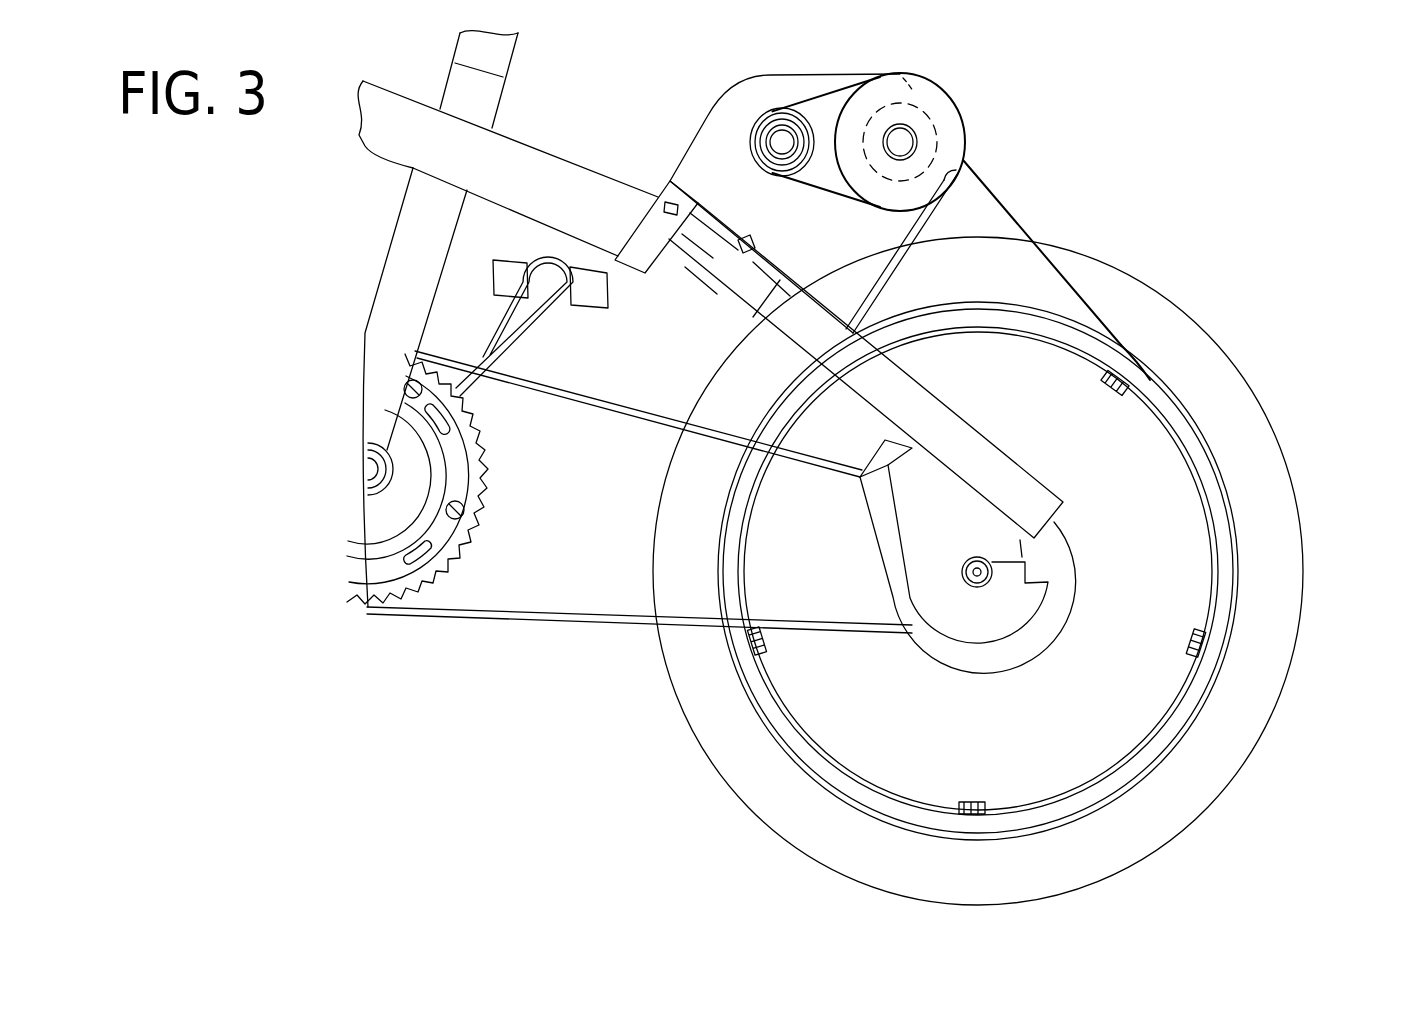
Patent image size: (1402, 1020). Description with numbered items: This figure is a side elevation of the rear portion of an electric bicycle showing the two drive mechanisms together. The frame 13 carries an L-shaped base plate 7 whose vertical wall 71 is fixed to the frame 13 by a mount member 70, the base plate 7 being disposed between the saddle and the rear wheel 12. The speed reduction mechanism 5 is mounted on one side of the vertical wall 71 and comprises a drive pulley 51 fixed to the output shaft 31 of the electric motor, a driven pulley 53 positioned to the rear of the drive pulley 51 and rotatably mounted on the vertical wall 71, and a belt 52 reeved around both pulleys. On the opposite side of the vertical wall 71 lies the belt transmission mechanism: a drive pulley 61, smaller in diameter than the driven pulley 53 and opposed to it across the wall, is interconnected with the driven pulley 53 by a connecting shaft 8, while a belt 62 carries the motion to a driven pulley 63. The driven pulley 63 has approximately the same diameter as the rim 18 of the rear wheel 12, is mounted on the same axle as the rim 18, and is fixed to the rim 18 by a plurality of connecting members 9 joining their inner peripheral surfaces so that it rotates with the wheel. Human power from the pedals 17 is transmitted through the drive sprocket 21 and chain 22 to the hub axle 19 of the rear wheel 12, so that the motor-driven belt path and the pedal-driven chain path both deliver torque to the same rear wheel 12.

The speed reduction mechanism 5 is at (925, 44).
The base plate 7 is at (682, 167).
The connecting shaft 8 is at (918, 141).
The connecting members 9 is at (1101, 392).
The rear wheel 12 is at (690, 720).
The frame 13 is at (510, 150).
The pedals 17 is at (593, 307).
The rim 18 is at (1152, 747).
The hub axle 19 is at (995, 567).
The drive sprocket 21 is at (490, 490).
The chain 22 is at (502, 616).
The output shaft 31 is at (773, 134).
The drive pulley 51 is at (790, 112).
The belt 52 is at (852, 88).
The driven pulley 53 is at (908, 76).
The drive pulley 61 is at (922, 104).
The belt 62 is at (1012, 224).
The driven pulley 63 is at (1230, 566).
The mount member 70 is at (622, 266).
The vertical wall 71 is at (737, 244).